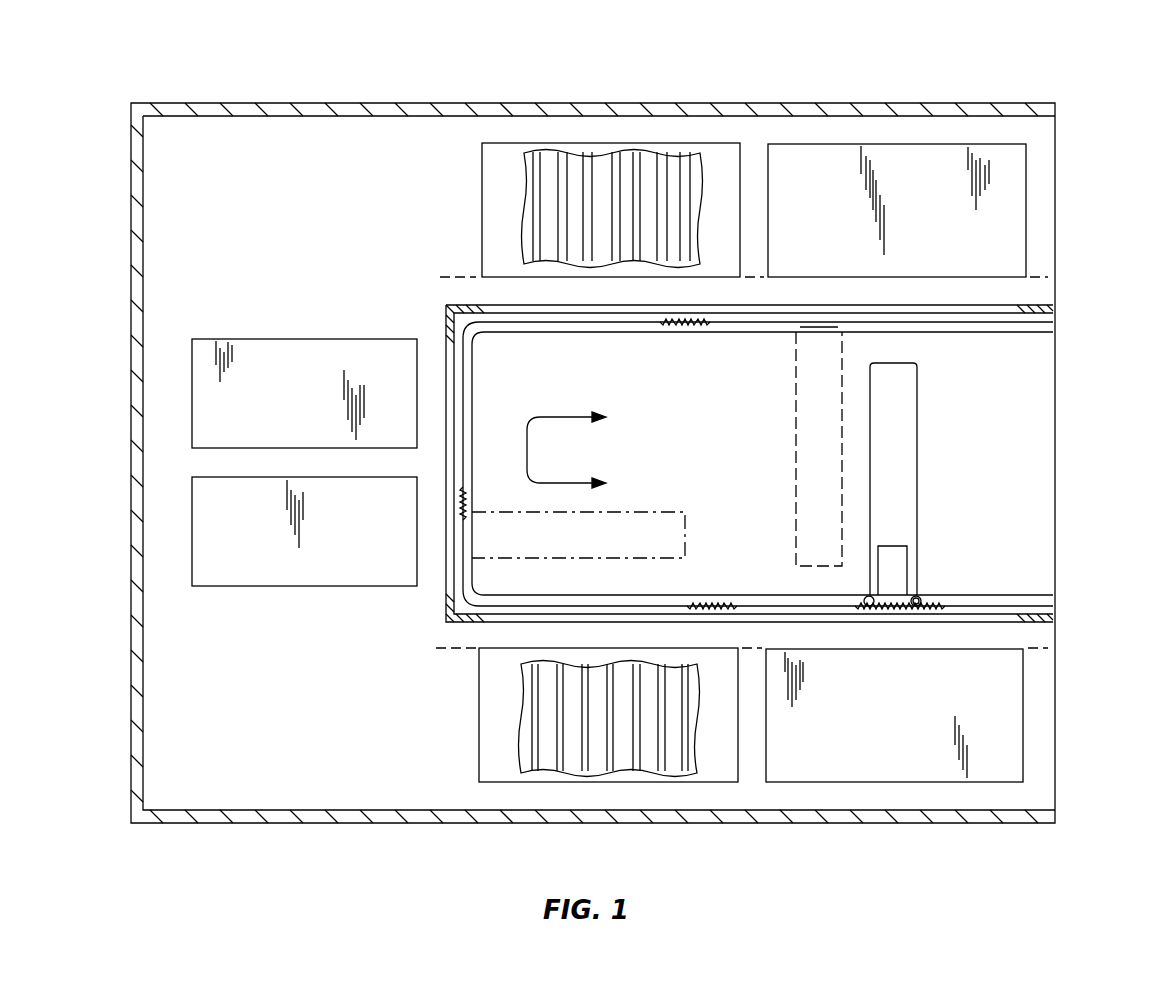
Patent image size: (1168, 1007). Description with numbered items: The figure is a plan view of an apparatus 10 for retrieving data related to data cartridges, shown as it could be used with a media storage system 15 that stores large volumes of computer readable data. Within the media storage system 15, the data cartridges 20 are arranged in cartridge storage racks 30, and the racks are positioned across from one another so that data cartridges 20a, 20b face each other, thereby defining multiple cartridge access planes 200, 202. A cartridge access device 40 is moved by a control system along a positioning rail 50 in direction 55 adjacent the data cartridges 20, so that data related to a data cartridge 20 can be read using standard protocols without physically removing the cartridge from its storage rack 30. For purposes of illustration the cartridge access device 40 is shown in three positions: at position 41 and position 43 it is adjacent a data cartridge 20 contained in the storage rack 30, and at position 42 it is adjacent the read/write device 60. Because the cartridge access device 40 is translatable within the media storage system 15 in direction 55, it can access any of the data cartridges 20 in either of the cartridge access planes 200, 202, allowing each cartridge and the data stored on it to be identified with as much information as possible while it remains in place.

The apparatus 10 is at (1075, 71).
The media storage system 15 is at (173, 103).
The data cartridge 20 is at (573, 152).
The data cartridge 20a is at (560, 715).
The data cartridge 20b is at (560, 212).
The cartridge storage rack 30 is at (790, 143).
The cartridge access device 40 is at (935, 461).
The position 41 is at (917, 388).
The position 42 is at (657, 512).
The position 43 is at (796, 385).
The positioning rail 50 is at (472, 372).
The direction 55 is at (527, 447).
The read/write device 60 is at (218, 477).
The cartridge access plane 200 is at (456, 275).
The cartridge access plane 202 is at (455, 648).